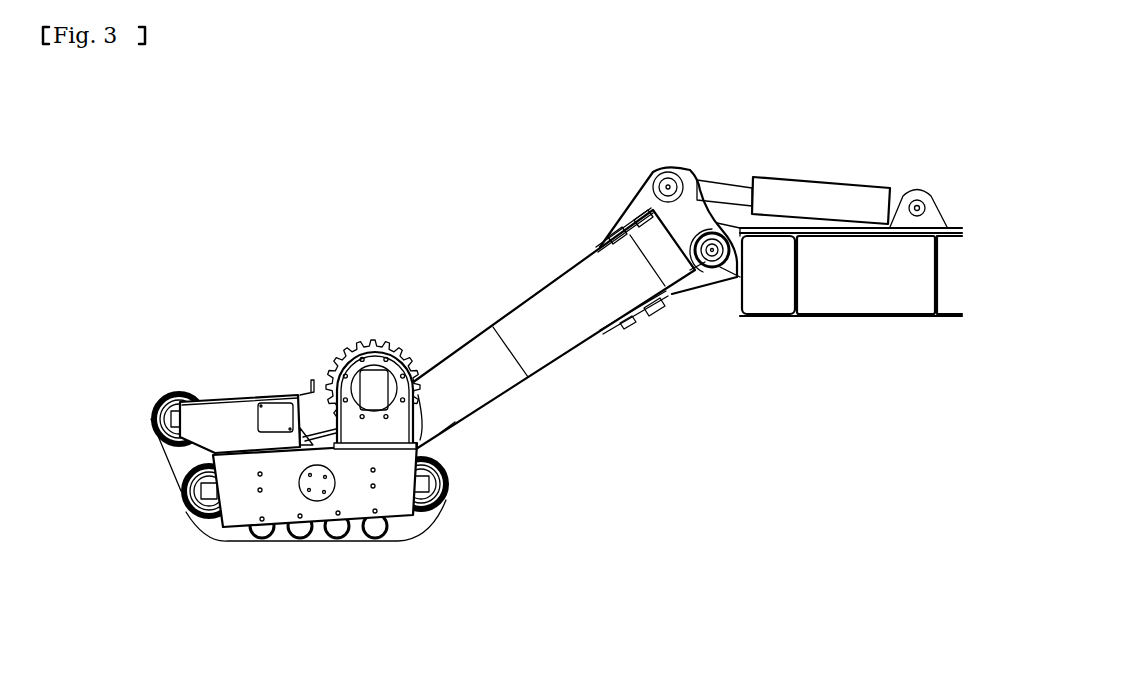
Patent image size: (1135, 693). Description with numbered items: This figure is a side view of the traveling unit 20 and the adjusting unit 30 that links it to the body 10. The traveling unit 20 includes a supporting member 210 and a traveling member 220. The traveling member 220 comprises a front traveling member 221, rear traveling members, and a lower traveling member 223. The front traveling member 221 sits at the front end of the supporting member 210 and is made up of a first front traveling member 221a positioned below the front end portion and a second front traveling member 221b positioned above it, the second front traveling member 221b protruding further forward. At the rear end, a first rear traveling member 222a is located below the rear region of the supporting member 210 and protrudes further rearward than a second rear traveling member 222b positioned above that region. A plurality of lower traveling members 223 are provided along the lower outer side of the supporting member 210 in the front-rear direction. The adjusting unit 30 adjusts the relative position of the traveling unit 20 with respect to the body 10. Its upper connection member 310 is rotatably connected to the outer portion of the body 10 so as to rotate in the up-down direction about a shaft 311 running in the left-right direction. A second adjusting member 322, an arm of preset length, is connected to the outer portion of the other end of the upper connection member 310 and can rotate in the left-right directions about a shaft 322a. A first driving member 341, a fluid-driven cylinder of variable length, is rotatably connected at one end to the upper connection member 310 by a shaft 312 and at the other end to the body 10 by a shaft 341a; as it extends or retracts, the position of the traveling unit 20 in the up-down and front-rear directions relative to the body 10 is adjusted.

The body 10 is at (770, 300).
The traveling unit 20 is at (315, 484).
The adjusting unit 30 is at (571, 276).
The supporting member 210 is at (271, 468).
The traveling member 220 is at (315, 535).
The front traveling member 221 is at (166, 513).
The first front traveling member 221a is at (198, 528).
The second front traveling member 221b is at (148, 440).
The first rear traveling member 222a is at (447, 507).
The second rear traveling member 222b is at (420, 397).
The lower traveling member 223 is at (292, 538).
The upper connection member 310 is at (643, 223).
The shaft 311 is at (714, 270).
The shaft 312 is at (668, 172).
The second adjusting member 322 is at (548, 333).
The shaft 322a is at (667, 305).
The first driving member 341 is at (822, 169).
The shaft 341a is at (917, 199).